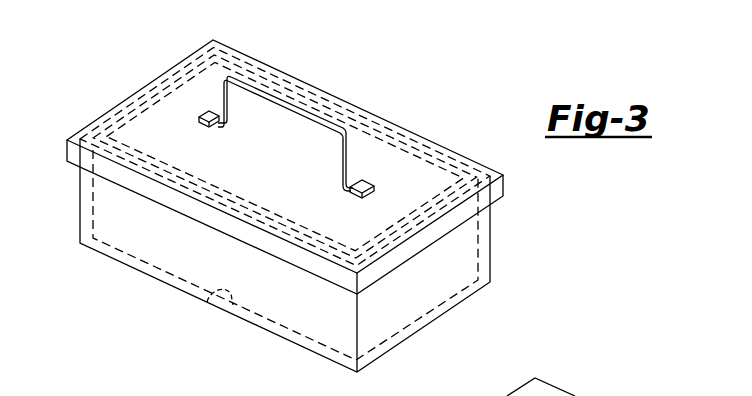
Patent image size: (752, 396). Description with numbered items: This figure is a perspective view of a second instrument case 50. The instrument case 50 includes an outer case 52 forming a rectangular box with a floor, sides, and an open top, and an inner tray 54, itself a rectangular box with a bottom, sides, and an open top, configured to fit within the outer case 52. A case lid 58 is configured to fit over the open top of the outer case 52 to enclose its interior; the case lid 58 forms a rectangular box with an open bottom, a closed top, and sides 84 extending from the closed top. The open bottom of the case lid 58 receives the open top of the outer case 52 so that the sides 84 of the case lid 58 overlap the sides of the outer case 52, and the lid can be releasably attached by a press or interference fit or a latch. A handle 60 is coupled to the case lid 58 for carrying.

The instrument case 50 is at (140, 51).
The outer case 52 is at (173, 253).
The inner tray 54 is at (203, 300).
The case lid 58 is at (135, 128).
The handle 60 is at (305, 110).
The sides 84 is at (462, 395).